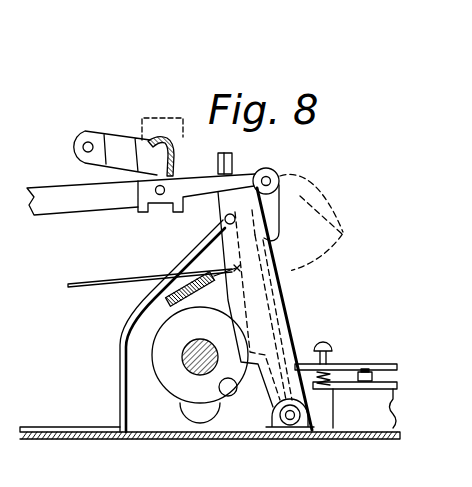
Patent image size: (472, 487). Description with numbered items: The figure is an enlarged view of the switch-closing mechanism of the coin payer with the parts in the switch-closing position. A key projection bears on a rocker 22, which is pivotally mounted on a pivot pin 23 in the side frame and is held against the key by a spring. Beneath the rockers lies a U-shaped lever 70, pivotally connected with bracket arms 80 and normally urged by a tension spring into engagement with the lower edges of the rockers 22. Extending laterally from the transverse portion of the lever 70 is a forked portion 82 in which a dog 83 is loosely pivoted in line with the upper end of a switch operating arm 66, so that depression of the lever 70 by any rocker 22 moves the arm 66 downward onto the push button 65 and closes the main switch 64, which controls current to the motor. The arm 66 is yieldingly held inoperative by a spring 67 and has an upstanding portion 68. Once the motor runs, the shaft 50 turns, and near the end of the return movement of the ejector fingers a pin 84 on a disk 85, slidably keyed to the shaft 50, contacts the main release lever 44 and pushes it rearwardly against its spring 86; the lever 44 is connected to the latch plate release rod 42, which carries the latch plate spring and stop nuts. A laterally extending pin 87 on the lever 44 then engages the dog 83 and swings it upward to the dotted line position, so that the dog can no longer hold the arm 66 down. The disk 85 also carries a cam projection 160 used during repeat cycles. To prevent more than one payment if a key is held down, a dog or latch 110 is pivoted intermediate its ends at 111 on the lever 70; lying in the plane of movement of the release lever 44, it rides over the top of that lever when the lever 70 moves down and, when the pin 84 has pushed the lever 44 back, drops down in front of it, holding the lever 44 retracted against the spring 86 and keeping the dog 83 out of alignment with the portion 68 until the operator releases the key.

The rocker 22 is at (116, 139).
The pivot pin 23 is at (83, 148).
The latch plate release rod 42 is at (81, 287).
The main release lever 44 is at (259, 316).
The shaft 50 is at (194, 366).
The main switch 64 is at (357, 420).
The push button 65 is at (366, 370).
The switch operating arm 66 is at (352, 363).
The spring 67 is at (335, 366).
The upstanding portion 68 is at (277, 292).
The U-shaped lever 70 is at (88, 205).
The bracket arm 80 is at (120, 348).
The forked portion 82 is at (249, 172).
The dog 83 is at (306, 212).
The pin 84 is at (275, 413).
The disk 85 is at (176, 388).
The spring 86 is at (197, 291).
The laterally extending pin 87 is at (235, 222).
The dog or latch 110 is at (189, 183).
The pivot 111 is at (159, 196).
The cam projection 160 is at (200, 412).